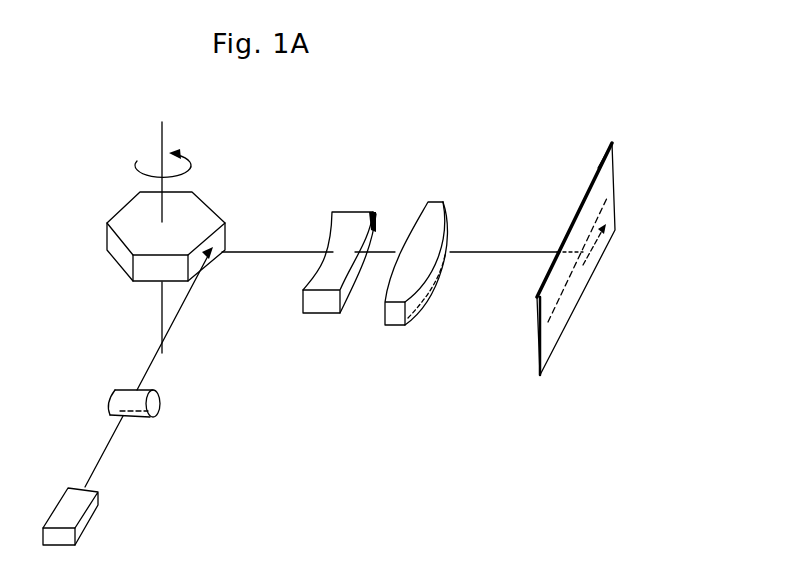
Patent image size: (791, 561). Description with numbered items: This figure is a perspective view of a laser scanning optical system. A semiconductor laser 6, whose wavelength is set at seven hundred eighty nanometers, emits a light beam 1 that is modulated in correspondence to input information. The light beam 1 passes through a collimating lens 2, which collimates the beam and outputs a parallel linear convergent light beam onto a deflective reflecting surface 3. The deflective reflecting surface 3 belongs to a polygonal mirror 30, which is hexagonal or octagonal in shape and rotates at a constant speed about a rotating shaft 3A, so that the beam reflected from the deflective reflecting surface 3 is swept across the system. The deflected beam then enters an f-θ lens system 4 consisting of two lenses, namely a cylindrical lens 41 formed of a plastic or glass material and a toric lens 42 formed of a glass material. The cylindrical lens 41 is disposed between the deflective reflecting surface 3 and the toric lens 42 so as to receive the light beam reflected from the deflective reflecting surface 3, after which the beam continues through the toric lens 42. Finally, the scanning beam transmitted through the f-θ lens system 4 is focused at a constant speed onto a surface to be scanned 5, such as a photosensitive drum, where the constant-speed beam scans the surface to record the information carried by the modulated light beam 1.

The light beam 1 is at (470, 252).
The collimating lens 2 is at (157, 403).
The deflective reflecting surface 3 is at (189, 232).
The rotating shaft 3A is at (165, 131).
The polygonal mirror 30 is at (202, 212).
The f-θ lens system 4 is at (447, 198).
The cylindrical lens 41 is at (323, 307).
The toric lens 42 is at (393, 320).
The surface to be scanned 5 is at (560, 333).
The semiconductor laser 6 is at (83, 520).